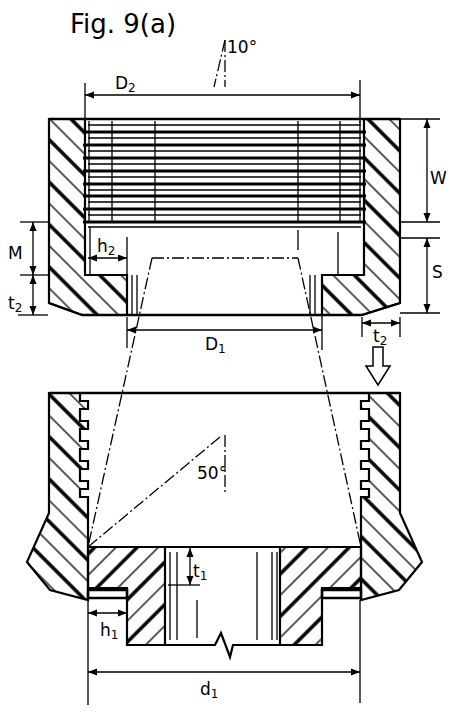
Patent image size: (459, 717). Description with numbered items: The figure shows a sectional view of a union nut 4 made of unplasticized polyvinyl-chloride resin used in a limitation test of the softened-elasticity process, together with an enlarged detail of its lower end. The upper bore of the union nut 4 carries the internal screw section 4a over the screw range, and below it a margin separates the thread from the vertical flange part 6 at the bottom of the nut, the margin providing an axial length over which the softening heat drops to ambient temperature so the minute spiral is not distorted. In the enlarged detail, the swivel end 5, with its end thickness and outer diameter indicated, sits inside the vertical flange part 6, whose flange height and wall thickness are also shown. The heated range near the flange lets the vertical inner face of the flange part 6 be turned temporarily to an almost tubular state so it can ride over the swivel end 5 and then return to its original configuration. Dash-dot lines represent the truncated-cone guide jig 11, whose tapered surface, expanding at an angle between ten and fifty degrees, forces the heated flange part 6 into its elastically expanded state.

The union nut 4 is at (58, 160).
The screw section 4a is at (334, 147).
The swivel end 5 is at (307, 557).
The vertical flange part 6 is at (103, 305).
The guide jig 11 is at (128, 372).